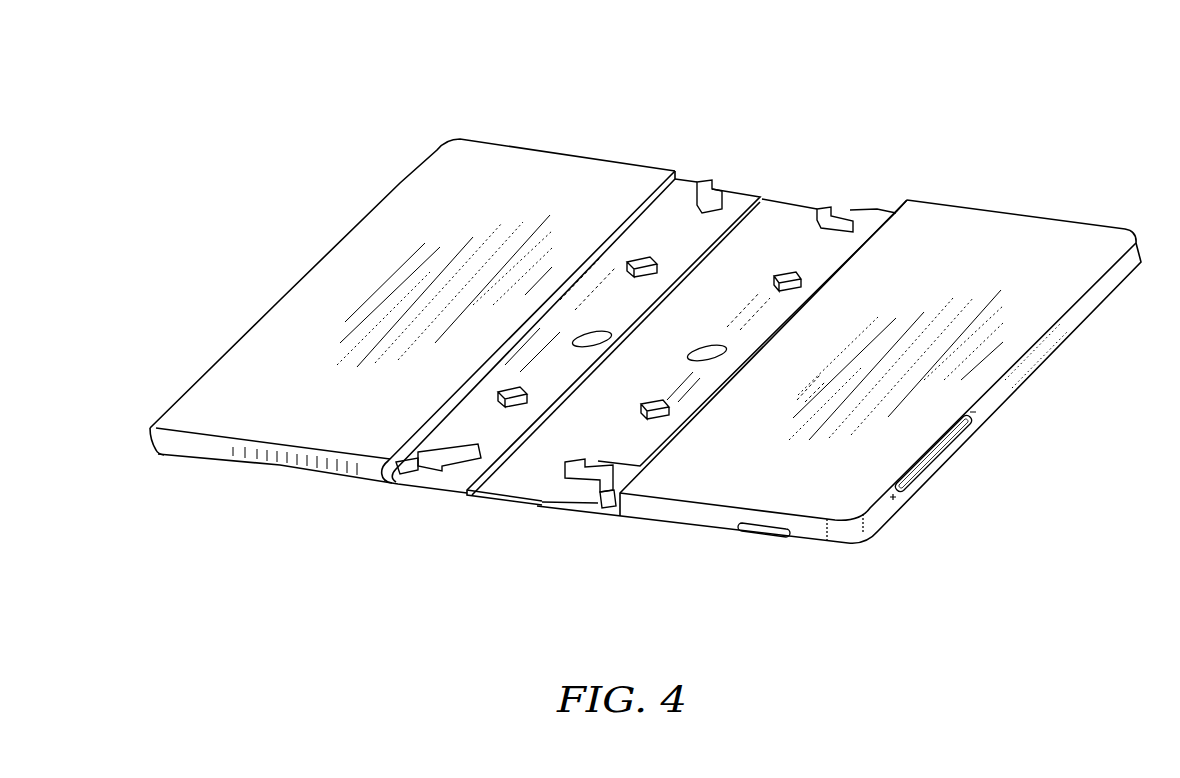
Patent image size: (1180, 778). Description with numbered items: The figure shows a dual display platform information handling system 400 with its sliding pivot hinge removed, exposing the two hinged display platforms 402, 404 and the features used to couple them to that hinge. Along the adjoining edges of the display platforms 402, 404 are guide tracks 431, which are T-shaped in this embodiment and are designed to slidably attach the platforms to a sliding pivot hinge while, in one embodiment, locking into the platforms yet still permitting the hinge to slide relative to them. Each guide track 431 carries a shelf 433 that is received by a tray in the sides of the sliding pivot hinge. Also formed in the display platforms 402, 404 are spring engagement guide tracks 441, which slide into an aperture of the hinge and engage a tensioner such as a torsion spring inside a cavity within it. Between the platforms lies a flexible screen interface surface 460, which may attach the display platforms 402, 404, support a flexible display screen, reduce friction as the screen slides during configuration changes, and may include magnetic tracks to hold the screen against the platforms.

The dual display platform information handling system 400 is at (1073, 77).
The display platform 402 is at (260, 463).
The display platform 404 is at (717, 517).
The guide track 431 is at (710, 195).
The shelf 433 is at (405, 475).
The spring engagement guide track 441 is at (637, 258).
The flexible screen interface surface 460 is at (790, 203).